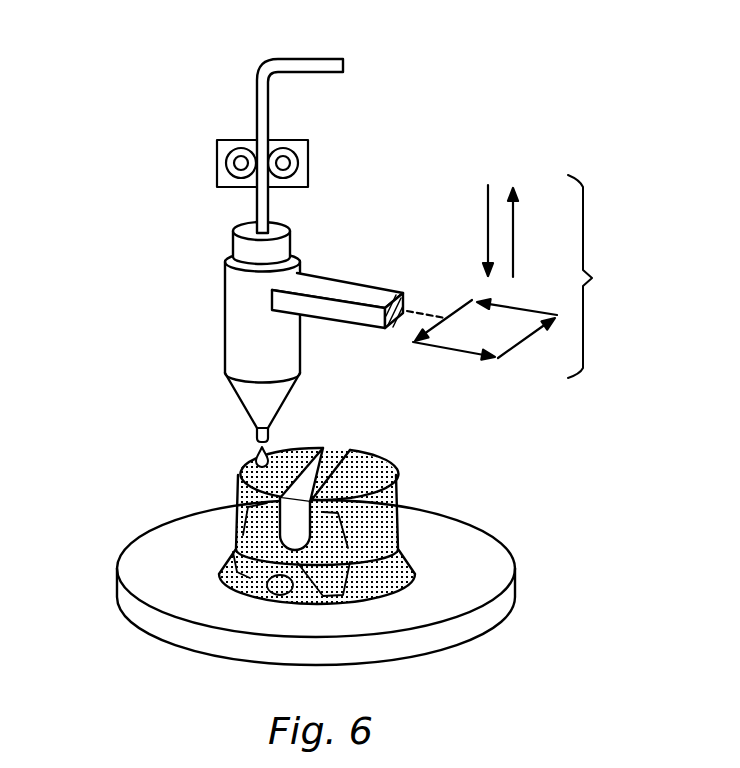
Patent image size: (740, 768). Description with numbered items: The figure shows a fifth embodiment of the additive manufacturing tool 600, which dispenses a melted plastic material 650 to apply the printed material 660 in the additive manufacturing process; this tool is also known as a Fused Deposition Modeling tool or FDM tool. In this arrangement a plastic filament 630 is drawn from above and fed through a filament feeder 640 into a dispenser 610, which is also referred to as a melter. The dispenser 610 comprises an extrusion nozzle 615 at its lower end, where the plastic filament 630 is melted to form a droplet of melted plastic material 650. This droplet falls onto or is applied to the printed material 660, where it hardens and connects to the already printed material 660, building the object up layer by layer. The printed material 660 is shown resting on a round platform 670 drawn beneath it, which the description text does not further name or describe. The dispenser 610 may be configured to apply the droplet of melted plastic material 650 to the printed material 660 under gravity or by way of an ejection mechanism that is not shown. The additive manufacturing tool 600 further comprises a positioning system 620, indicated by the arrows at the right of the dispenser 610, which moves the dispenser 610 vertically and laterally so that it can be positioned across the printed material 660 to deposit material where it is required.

The additive manufacturing tool 600 is at (524, 61).
The dispenser 610 is at (240, 318).
The extrusion nozzle 615 is at (256, 437).
The positioning system 620 is at (525, 276).
The plastic filament 630 is at (263, 80).
The filament feeder 640 is at (222, 152).
The melted plastic material 650 is at (252, 457).
The printed material 660 is at (388, 522).
The build platform 670 is at (140, 548).